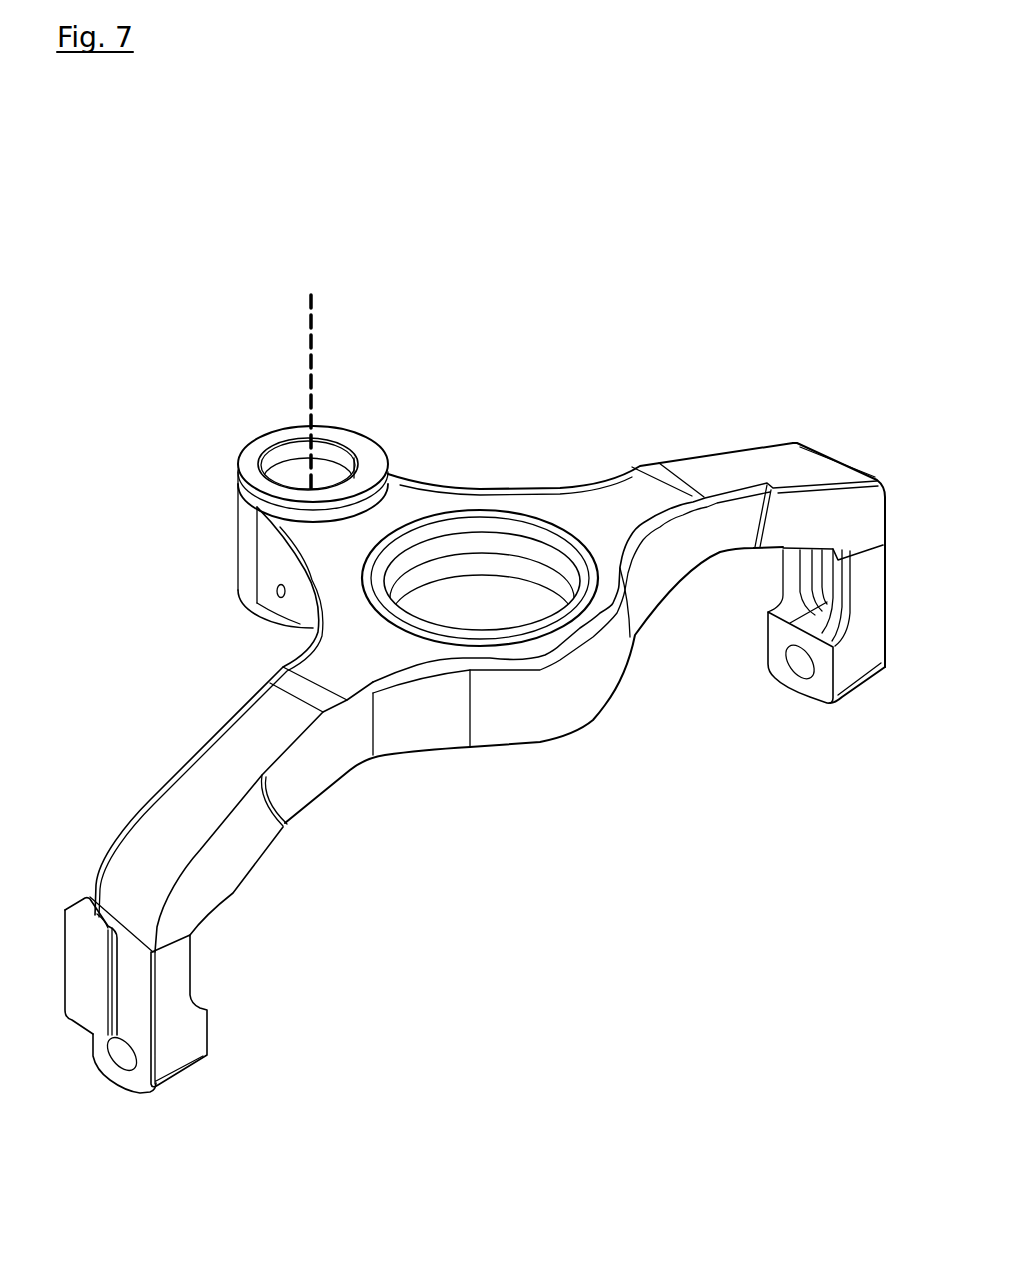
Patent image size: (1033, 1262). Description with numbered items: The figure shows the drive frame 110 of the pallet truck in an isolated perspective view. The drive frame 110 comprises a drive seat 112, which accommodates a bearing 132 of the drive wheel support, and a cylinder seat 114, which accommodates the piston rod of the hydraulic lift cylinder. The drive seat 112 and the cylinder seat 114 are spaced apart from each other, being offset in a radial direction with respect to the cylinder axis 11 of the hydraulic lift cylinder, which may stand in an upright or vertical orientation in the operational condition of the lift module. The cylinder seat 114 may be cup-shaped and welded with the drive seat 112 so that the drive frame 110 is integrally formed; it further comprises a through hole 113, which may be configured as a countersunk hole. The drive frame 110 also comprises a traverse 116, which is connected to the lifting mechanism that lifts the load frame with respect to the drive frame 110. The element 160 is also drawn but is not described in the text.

The drive frame 110 is at (447, 635).
The cylinder axis 11 is at (310, 347).
The drive seat 112 is at (585, 789).
The through hole 113 is at (277, 592).
The cylinder seat 114 is at (221, 437).
The traverse 116 is at (200, 805).
The bearing 132 is at (498, 530).
The fastening arm 160 is at (740, 467).